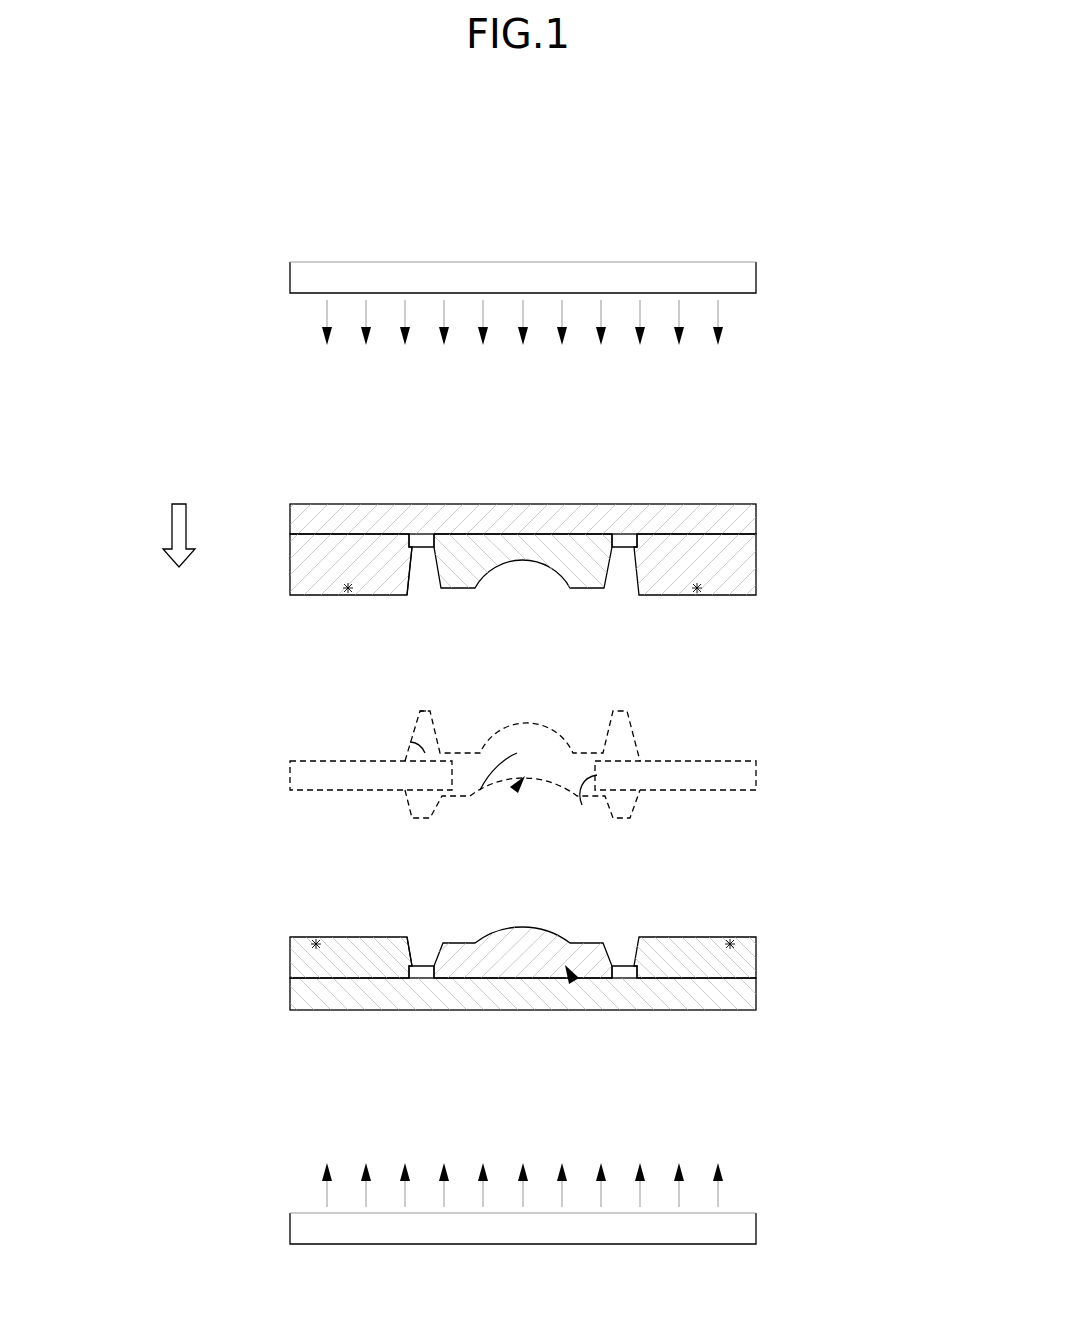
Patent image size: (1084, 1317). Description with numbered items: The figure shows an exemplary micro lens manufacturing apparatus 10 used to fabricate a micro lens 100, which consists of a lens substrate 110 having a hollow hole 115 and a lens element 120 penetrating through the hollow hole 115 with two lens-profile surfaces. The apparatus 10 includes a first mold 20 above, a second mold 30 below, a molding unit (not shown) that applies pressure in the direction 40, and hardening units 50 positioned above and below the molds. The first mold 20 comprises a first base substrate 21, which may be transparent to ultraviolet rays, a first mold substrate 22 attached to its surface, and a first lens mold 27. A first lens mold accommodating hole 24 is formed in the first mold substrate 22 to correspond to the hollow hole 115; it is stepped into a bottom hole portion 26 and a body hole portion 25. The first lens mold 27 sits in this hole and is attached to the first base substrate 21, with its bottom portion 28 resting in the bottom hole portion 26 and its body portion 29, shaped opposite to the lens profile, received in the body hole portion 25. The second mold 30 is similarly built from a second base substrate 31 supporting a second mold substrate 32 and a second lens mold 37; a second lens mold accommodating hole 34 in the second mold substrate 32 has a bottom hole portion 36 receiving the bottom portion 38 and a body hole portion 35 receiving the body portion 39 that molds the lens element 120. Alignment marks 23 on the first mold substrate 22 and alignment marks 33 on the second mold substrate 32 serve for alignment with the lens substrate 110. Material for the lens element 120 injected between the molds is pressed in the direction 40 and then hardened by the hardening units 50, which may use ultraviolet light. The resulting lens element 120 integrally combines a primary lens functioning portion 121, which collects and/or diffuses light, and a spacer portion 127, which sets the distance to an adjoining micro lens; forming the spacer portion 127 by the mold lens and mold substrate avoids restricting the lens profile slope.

The micro lens manufacturing apparatus 10 is at (289, 209).
The first mold 20 is at (837, 548).
The first base substrate 21 is at (731, 513).
The first mold substrate 22 is at (564, 499).
The alignment mark 23 is at (347, 589).
The first lens mold accommodating hole 24 is at (402, 502).
The body hole portion 25 is at (415, 572).
The bottom hole portion 26 is at (412, 546).
The first lens mold 27 is at (541, 496).
The bottom portion 28 is at (622, 545).
The body portion 29 is at (553, 547).
The second mold 30 is at (837, 946).
The second base substrate 31 is at (730, 1000).
The second mold substrate 32 is at (564, 985).
The alignment mark 33 is at (314, 942).
The second lens mold accommodating hole 34 is at (435, 1027).
The body hole portion 35 is at (413, 950).
The bottom hole portion 36 is at (412, 968).
The second lens mold 37 is at (572, 980).
The bottom portion 38 is at (628, 975).
The body portion 39 is at (538, 941).
The direction 40 is at (176, 526).
The hardening unit 50 is at (689, 276).
The micro lens 100 is at (541, 773).
The lens substrate 110 is at (300, 772).
The hollow hole 115 is at (582, 805).
The lens element 120 is at (514, 792).
The primary lens functioning portion 121 is at (480, 790).
The spacer portion 127 is at (420, 711).